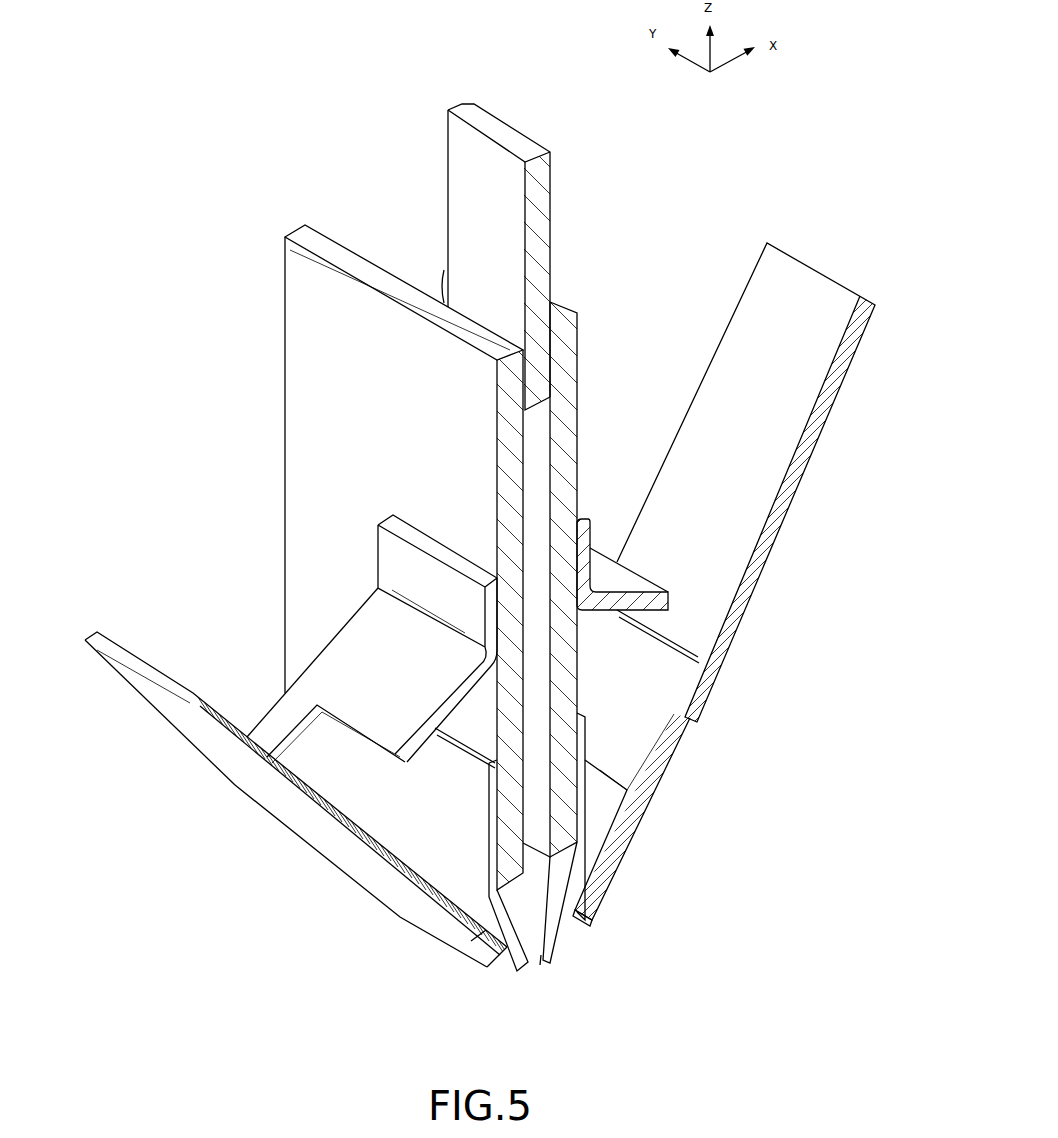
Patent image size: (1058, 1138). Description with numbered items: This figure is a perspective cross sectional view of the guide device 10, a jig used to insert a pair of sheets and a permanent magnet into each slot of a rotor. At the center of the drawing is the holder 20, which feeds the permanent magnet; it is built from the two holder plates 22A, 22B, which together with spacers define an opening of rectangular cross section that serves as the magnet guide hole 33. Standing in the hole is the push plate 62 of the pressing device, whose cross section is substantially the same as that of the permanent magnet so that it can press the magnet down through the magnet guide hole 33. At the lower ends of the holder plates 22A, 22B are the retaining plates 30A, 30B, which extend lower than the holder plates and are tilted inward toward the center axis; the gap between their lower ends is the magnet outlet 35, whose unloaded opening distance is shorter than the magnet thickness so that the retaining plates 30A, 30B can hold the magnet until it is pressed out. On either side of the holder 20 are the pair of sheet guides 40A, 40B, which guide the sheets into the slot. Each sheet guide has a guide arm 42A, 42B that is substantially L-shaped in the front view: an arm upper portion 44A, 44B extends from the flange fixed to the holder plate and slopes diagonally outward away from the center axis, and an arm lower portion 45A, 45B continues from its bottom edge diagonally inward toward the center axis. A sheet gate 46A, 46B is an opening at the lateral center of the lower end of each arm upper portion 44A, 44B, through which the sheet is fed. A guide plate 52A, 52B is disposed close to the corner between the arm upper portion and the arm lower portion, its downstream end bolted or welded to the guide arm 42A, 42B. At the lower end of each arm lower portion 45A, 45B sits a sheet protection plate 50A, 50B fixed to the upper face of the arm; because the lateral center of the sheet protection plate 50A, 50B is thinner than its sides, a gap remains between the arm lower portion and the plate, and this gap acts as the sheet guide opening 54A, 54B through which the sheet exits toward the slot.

The guide device 10 is at (103, 167).
The holder 20 is at (257, 408).
The holder plate 22A is at (287, 303).
The holder plate 22B is at (578, 325).
The push plate 62 is at (475, 178).
The magnet guide hole 33 is at (533, 450).
The arm upper portion 44A is at (365, 625).
The arm upper portion 44B is at (632, 583).
The guide arm 42A is at (342, 668).
The guide arm 42B is at (652, 798).
The sheet gate 46A is at (293, 743).
The sheet gate 46B is at (687, 633).
The guide plate 52A is at (210, 750).
The guide plate 52B is at (810, 287).
The arm lower portion 45A is at (415, 922).
The arm lower portion 45B is at (660, 787).
The sheet guide opening 54A is at (467, 960).
The sheet guide opening 54B is at (625, 832).
The sheet protection plate 50A is at (458, 890).
The sheet protection plate 50B is at (590, 768).
The retaining plate 30A is at (510, 967).
The retaining plate 30B is at (557, 943).
The magnet outlet 35 is at (537, 975).
The sheet guide 40A is at (182, 847).
The sheet guide 40B is at (808, 545).